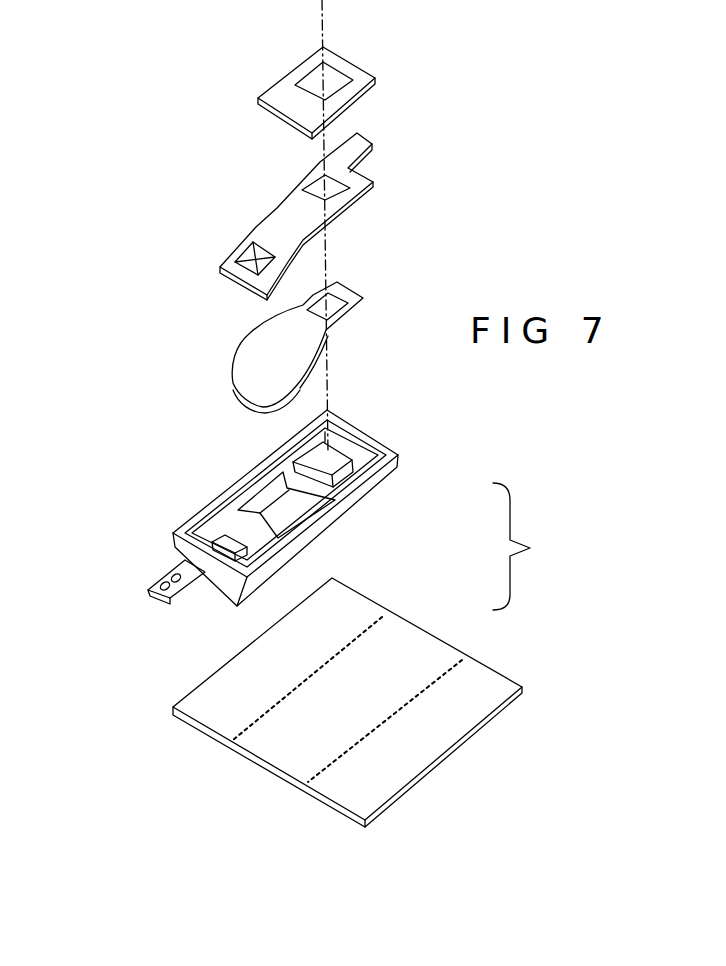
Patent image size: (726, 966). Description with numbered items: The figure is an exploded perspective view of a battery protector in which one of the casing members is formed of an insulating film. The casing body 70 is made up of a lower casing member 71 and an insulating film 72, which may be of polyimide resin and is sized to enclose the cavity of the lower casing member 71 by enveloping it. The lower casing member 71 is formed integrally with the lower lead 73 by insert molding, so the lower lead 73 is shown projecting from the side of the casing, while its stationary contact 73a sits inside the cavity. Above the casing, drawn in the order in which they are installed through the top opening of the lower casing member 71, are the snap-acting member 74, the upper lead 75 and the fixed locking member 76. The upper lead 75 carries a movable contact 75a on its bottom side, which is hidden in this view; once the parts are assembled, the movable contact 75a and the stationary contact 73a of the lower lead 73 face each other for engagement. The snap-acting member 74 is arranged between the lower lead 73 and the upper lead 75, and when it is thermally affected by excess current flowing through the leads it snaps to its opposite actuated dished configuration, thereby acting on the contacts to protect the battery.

The casing body 70 is at (531, 546).
The lower casing member 71 is at (367, 488).
The insulating film 72 is at (363, 593).
The lower lead 73 is at (160, 577).
The stationary contact 73a is at (222, 540).
The snap-acting member 74 is at (257, 370).
The upper lead 75 is at (276, 212).
The movable contact 75a is at (237, 260).
The fixed locking member 76 is at (278, 95).